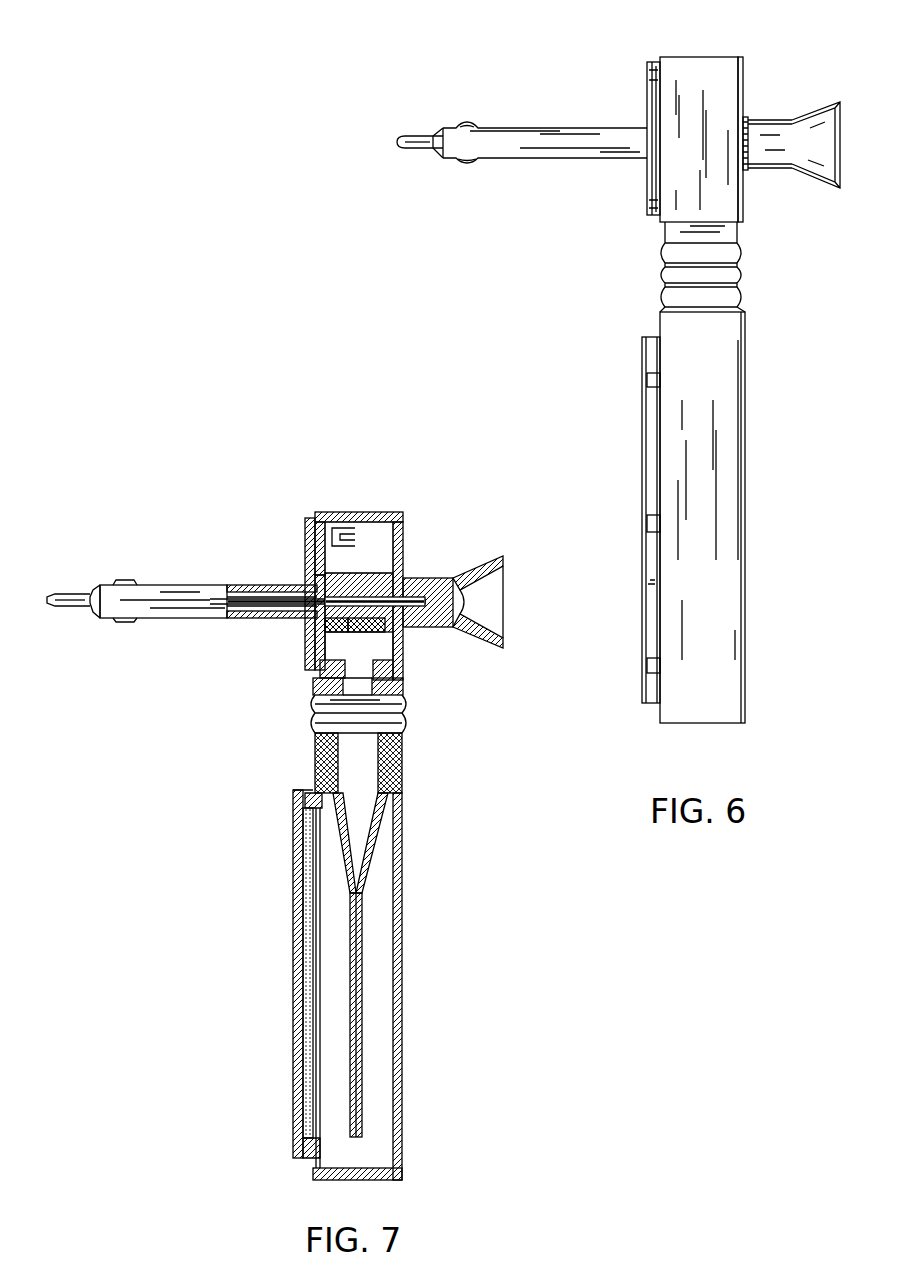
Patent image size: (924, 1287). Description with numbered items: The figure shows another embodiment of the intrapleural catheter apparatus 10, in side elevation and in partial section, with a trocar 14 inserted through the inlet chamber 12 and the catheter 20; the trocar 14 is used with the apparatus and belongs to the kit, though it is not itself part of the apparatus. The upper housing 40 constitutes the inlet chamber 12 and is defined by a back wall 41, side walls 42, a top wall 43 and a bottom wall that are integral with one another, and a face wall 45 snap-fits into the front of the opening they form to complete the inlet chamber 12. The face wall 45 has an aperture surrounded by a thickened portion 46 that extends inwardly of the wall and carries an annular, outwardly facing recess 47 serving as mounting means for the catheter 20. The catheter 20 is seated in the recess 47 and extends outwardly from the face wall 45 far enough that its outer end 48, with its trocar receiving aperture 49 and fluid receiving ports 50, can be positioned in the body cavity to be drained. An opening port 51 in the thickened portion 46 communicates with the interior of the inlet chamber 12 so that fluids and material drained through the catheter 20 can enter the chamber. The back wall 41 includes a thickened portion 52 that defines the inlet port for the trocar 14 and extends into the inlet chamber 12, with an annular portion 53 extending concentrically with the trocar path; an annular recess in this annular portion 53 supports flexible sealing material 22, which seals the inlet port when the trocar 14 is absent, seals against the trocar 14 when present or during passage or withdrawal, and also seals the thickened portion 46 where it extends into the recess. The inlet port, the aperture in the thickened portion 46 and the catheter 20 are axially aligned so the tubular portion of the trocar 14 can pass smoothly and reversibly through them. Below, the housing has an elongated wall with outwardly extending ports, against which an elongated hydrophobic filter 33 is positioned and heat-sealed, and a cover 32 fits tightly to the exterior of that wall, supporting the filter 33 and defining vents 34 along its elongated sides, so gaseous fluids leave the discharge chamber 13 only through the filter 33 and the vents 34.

In FIG. 6, the intrapleural catheter apparatus 10 is at (748, 344).
In FIG. 7, the inlet chamber 12 is at (378, 570).
In FIG. 7, the discharge chamber 13 is at (390, 980).
In FIG. 6, the trocar 14 is at (410, 134).
In FIG. 7, the trocar 14 is at (68, 593).
In FIG. 6, the catheter 20 is at (559, 127).
In FIG. 7, the catheter 20 is at (182, 584).
In FIG. 7, the sealing material 22 is at (367, 633).
In FIG. 6, the cover 32 is at (641, 438).
In FIG. 7, the cover 32 is at (293, 1122).
In FIG. 7, the hydrophobic filter 33 is at (300, 1053).
In FIG. 6, the vents 34 is at (647, 380).
In FIG. 6, the upper housing 40 is at (743, 198).
In FIG. 6, the back wall 41 is at (744, 72).
In FIG. 7, the back wall 41 is at (405, 522).
In FIG. 6, the side walls 42 is at (657, 188).
In FIG. 6, the top wall 43 is at (698, 56).
In FIG. 7, the top wall 43 is at (377, 511).
In FIG. 6, the face wall 45 is at (653, 60).
In FIG. 7, the face wall 45 is at (310, 517).
In FIG. 7, the thickened portion 46 is at (308, 540).
In FIG. 7, the annular outwardly facing recess 47 is at (307, 568).
In FIG. 7, the outer end 48 is at (93, 612).
In FIG. 7, the trocar receiving aperture 49 is at (93, 592).
In FIG. 6, the fluid receiving ports 50 is at (467, 126).
In FIG. 7, the fluid receiving ports 50 is at (113, 587).
In FIG. 7, the opening port 51 is at (345, 620).
In FIG. 6, the thickened portion of back wall 52 is at (746, 113).
In FIG. 7, the thickened portion of back wall 52 is at (412, 576).
In FIG. 7, the annular portion 53 is at (365, 628).